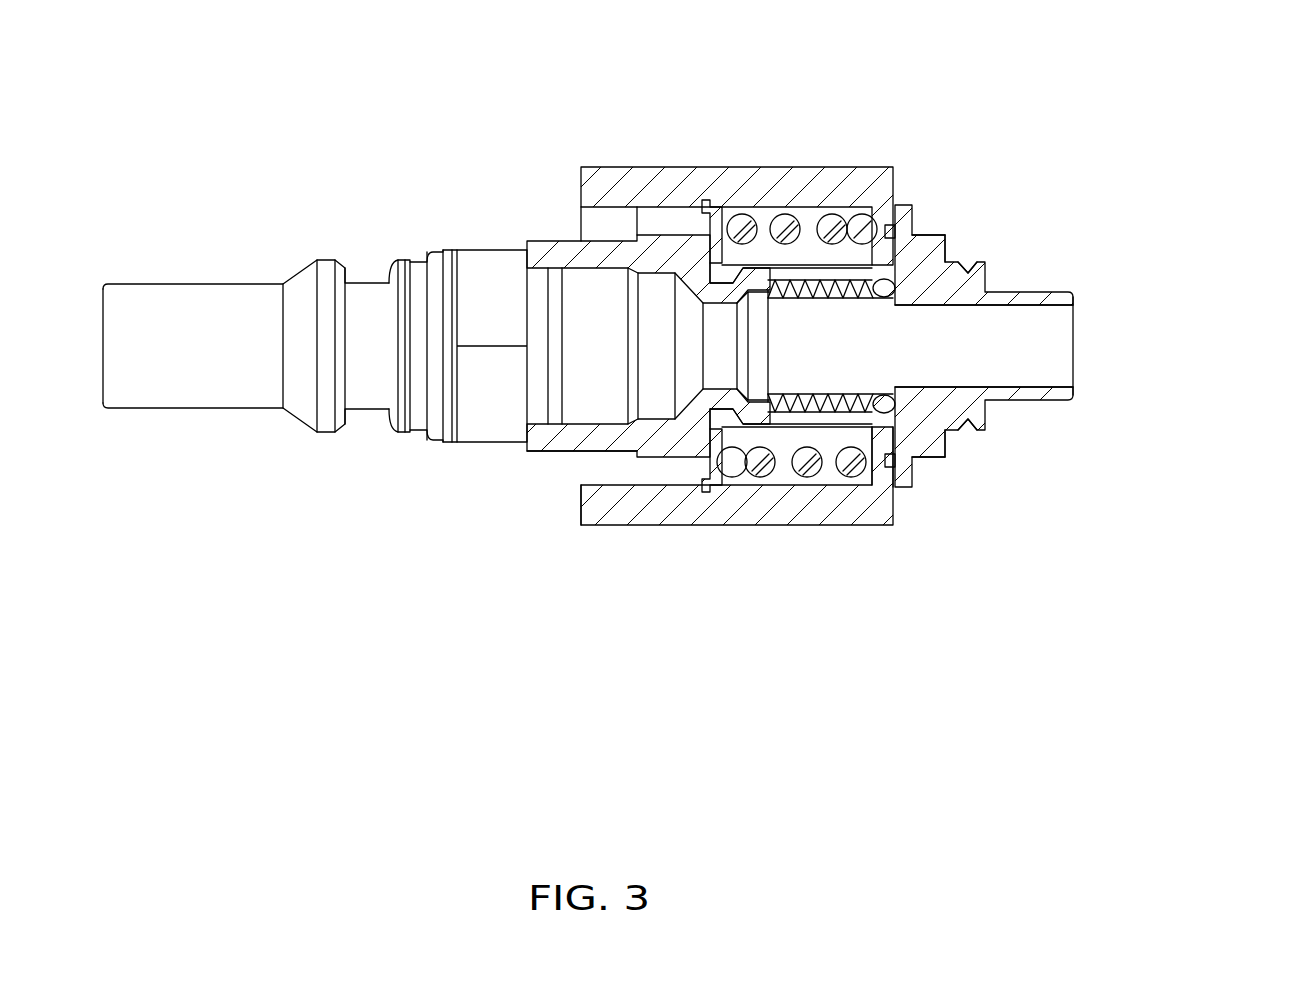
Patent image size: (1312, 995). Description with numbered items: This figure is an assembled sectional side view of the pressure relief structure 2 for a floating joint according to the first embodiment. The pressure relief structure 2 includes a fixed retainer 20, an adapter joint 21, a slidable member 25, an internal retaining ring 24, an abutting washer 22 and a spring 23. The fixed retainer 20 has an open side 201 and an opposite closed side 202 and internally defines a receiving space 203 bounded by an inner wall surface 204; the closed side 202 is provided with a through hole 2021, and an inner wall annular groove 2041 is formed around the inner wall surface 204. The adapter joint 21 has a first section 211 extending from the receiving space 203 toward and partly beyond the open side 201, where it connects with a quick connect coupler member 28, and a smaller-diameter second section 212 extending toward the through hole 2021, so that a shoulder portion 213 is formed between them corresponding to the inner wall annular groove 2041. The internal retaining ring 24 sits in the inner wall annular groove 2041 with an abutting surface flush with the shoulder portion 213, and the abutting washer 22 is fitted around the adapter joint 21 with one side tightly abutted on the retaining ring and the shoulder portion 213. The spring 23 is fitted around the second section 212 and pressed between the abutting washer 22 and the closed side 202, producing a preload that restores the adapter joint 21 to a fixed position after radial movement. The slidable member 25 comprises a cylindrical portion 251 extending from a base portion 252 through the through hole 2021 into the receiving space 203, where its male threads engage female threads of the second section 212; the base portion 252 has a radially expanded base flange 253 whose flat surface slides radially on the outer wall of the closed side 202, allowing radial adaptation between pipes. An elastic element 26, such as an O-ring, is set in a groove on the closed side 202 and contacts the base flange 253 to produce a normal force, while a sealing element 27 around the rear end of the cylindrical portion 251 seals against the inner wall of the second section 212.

The pressure relief structure 2 is at (25, 34).
The fixed retainer 20 is at (608, 167).
The adapter joint 21 is at (542, 237).
The abutting washer 22 is at (717, 470).
The spring 23 is at (842, 216).
The internal retaining ring 24 is at (636, 525).
The slidable member 25 is at (1103, 305).
The elastic element 26 is at (945, 245).
The sealing element 27 is at (945, 235).
The quick connect coupler member 28 is at (188, 283).
The open side 201 is at (583, 470).
The closed side 202 is at (893, 490).
The receiving space 203 is at (640, 218).
The inner wall surface 204 is at (600, 218).
The first section 211 is at (578, 448).
The second section 212 is at (900, 410).
The shoulder portion 213 is at (733, 470).
The cylindrical portion 251 is at (900, 383).
The base portion 252 is at (985, 272).
The base flange 253 is at (888, 225).
The through hole 2021 is at (886, 440).
The inner wall annular groove 2041 is at (712, 200).